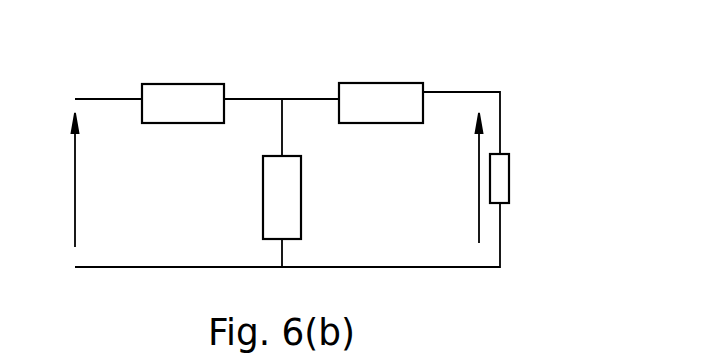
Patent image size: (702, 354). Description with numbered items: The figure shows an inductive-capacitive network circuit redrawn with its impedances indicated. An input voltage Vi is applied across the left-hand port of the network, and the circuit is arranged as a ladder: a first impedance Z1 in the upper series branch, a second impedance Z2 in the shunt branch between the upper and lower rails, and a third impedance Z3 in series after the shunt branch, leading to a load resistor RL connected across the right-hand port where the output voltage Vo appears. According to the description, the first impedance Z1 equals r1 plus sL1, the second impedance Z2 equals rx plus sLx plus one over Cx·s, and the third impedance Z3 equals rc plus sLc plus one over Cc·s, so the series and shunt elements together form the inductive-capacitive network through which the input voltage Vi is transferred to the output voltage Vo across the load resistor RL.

The first impedance Z1 is at (183, 84).
The second impedance Z2 is at (302, 197).
The third impedance Z3 is at (381, 84).
The load resistor RL is at (517, 176).
The input voltage Vi is at (60, 180).
The output voltage Vo is at (464, 178).